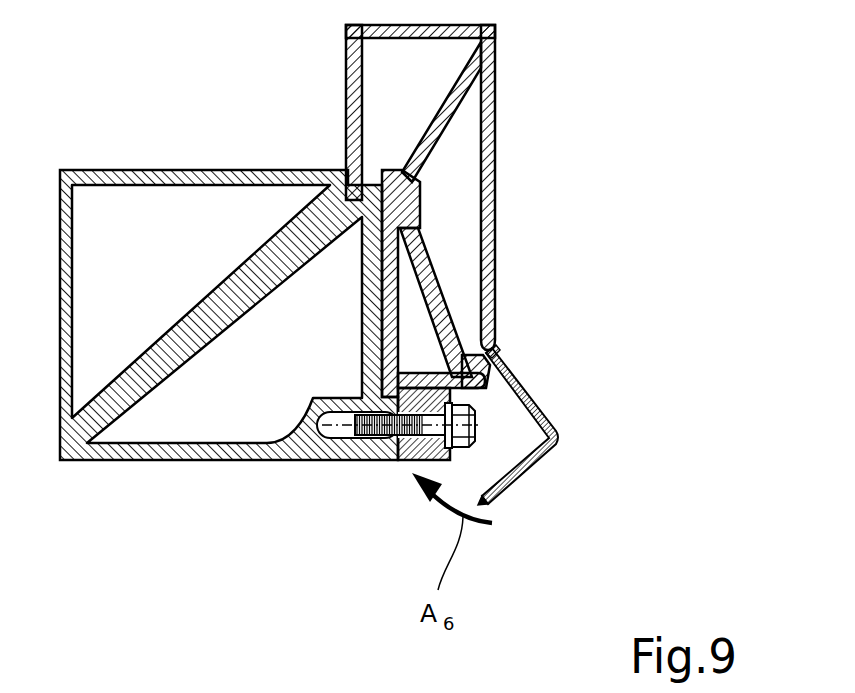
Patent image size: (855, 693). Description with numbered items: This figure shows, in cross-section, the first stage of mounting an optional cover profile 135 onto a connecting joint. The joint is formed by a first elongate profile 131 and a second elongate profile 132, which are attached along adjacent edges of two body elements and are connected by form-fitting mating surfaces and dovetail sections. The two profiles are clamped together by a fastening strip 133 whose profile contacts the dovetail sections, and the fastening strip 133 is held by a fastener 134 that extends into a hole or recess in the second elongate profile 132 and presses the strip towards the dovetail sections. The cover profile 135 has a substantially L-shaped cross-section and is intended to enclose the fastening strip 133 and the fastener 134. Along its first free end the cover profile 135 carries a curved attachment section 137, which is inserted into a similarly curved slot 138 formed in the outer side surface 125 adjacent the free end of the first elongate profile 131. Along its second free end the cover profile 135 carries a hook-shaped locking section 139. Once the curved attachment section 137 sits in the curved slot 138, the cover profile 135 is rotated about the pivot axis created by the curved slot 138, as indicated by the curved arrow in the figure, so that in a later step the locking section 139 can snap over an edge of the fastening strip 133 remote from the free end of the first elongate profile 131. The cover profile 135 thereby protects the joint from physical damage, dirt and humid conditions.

The outer side surface 125 is at (499, 186).
The first elongate profile 131 is at (481, 211).
The second elongate profile 132 is at (95, 170).
The fastening strip 133 is at (413, 462).
The fastener 134 is at (352, 460).
The cover profile 135 is at (569, 445).
The curved attachment section 137 is at (502, 352).
The curved slot 138 is at (490, 345).
The hook-shaped locking section 139 is at (490, 500).